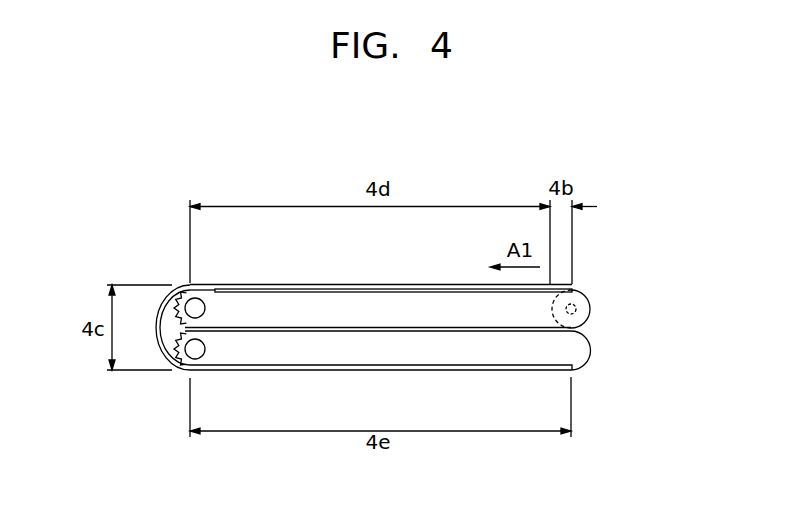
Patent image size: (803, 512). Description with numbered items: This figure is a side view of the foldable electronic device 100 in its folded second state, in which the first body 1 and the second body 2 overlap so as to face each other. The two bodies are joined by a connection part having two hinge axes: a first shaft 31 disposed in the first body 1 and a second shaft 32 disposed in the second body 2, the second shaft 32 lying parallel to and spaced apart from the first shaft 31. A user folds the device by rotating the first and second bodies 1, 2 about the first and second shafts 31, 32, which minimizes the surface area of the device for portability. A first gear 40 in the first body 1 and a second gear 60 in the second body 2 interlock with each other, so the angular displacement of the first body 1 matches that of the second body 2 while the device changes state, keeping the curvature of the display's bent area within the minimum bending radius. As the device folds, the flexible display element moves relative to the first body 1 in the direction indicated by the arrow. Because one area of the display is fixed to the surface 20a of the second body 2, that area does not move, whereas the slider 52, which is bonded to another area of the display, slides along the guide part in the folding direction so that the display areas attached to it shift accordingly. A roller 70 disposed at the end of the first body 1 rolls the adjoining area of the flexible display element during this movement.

The foldable electronic device 100 is at (663, 164).
The first gear 40 is at (170, 291).
The first body 1 is at (292, 313).
The slider 52 is at (370, 289).
The roller 70 is at (578, 302).
The second body 2 is at (580, 360).
The surface of the second body 20a is at (533, 372).
The first shaft 31 is at (199, 304).
The second shaft 32 is at (199, 352).
The second gear 60 is at (173, 368).